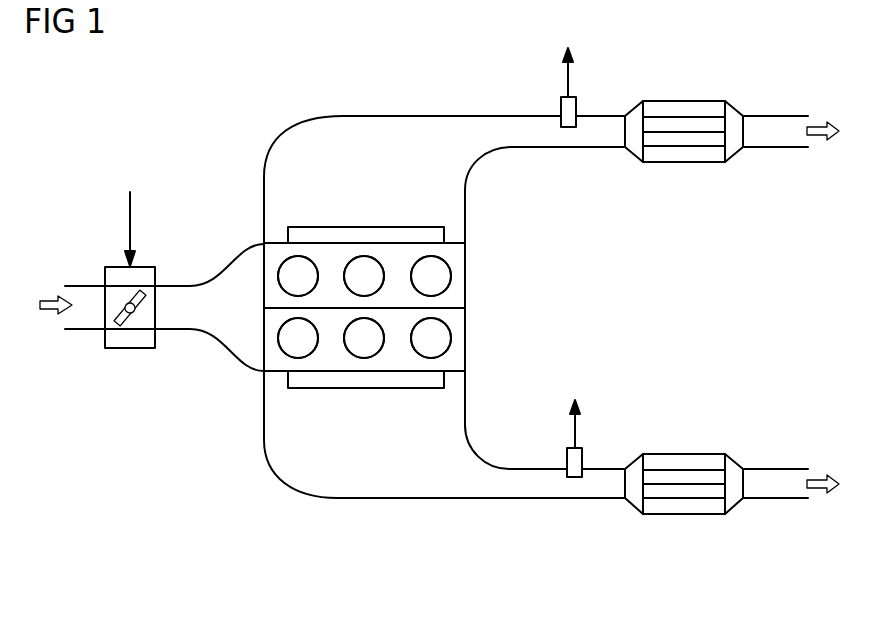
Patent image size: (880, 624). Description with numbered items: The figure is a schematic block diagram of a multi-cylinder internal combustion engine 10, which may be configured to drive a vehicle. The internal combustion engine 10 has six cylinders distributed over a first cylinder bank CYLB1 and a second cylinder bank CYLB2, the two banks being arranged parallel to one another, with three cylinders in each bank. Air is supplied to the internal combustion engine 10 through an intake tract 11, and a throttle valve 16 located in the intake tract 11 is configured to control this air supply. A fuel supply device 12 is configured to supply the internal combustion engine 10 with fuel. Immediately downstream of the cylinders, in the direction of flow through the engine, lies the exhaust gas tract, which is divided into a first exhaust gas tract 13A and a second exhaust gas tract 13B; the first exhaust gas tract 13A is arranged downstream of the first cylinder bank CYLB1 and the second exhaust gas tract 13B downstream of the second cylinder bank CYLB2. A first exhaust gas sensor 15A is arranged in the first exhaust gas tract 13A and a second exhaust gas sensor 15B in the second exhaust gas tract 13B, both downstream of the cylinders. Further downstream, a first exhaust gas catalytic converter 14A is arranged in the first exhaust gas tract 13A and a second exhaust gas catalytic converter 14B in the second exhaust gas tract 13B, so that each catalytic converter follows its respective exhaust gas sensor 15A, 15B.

The internal combustion engine 10 is at (108, 140).
The intake tract 11 is at (184, 302).
The fuel supply device 12 is at (402, 237).
The first exhaust gas tract 13A is at (458, 153).
The second exhaust gas tract 13B is at (458, 462).
The first exhaust gas catalytic converter 14A is at (685, 153).
The second exhaust gas catalytic converter 14B is at (685, 515).
The first exhaust gas sensor 15A is at (572, 107).
The second exhaust gas sensor 15B is at (574, 467).
The throttle valve 16 is at (120, 341).
The first cylinder bank CYLB1 is at (450, 298).
The second cylinder bank CYLB2 is at (450, 317).